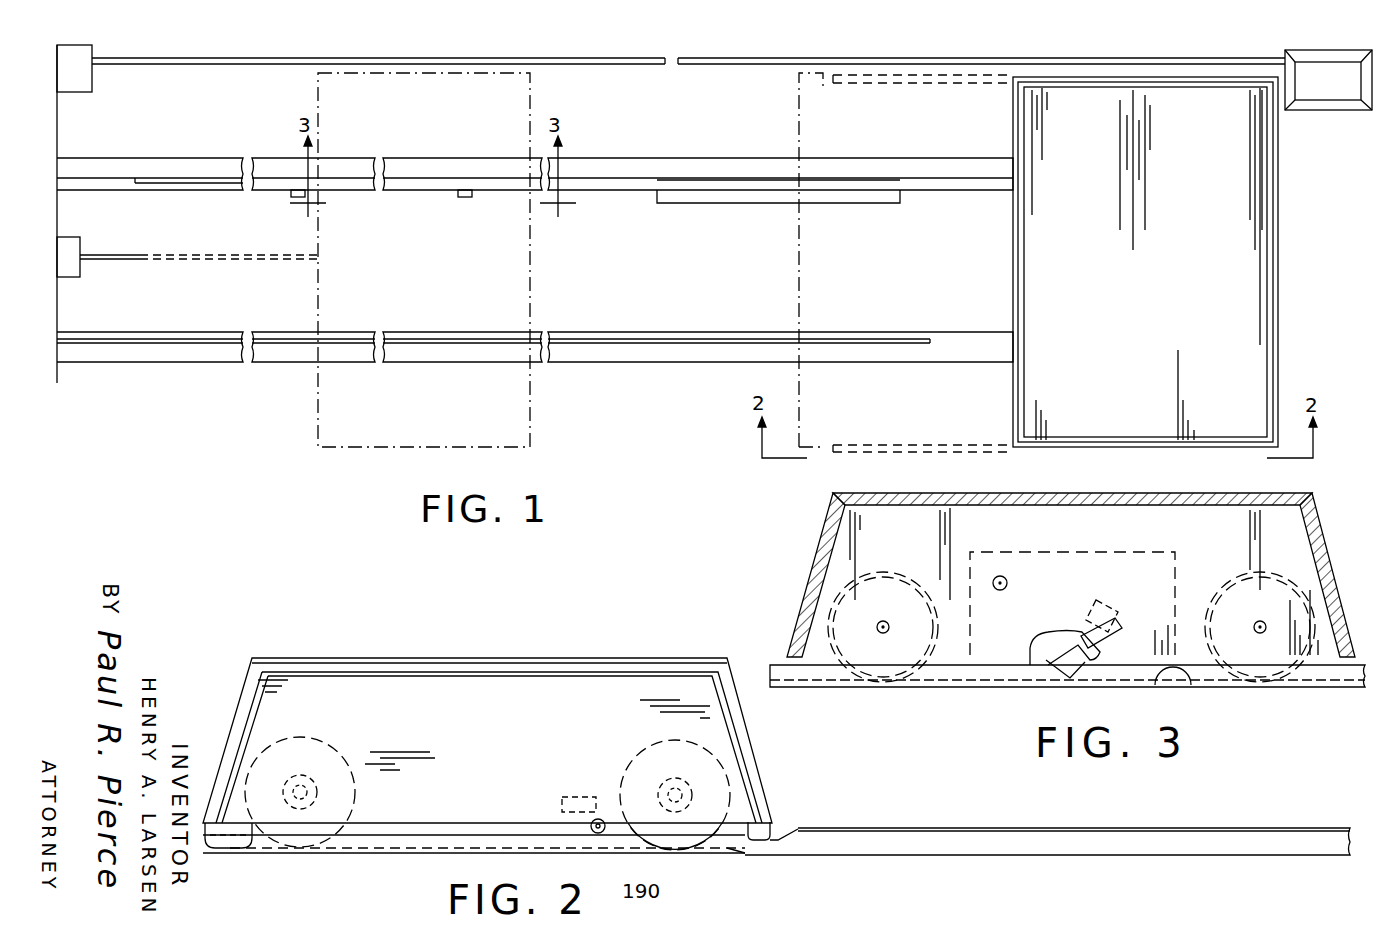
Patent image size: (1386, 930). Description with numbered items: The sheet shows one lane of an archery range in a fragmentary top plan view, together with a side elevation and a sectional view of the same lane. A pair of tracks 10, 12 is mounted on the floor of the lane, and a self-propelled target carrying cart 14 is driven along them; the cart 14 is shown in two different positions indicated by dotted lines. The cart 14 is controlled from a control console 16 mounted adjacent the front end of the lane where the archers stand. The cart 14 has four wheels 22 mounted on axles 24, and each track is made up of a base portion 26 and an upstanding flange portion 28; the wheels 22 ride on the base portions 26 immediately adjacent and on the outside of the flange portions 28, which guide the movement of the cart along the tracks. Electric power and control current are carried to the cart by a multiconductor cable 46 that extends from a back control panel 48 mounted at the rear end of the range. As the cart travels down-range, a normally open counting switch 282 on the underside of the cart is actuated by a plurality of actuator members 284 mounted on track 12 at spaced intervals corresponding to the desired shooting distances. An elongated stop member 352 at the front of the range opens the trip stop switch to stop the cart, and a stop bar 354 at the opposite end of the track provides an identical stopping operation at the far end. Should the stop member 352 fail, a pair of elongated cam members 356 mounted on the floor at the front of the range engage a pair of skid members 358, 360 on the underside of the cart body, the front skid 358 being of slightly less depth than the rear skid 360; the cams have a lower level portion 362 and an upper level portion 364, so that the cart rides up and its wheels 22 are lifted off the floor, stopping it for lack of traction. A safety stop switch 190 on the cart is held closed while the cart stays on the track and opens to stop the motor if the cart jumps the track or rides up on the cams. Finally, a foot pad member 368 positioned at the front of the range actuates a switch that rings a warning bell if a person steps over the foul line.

In FIG. 1, the track 10 is at (598, 372).
In FIG. 2, the track 10 is at (383, 855).
In FIG. 1, the track 12 is at (694, 153).
In FIG. 3, the track 12 is at (837, 690).
In FIG. 3, the target carrying cart 14 is at (1320, 506).
In FIG. 2, the target carrying cart 14 is at (538, 657).
In FIG. 1, the control console 16 is at (1338, 110).
In FIG. 3, the wheels 22 is at (910, 580).
In FIG. 2, the wheels 22 is at (332, 744).
In FIG. 3, the axles 24 is at (900, 617).
In FIG. 2, the axles 24 is at (487, 793).
In FIG. 1, the base portion 26 is at (744, 162).
In FIG. 1, the upstanding flange portion 28 is at (614, 178).
In FIG. 3, the upstanding flange portion 28 is at (784, 666).
In FIG. 1, the multiconductor cable 46 is at (140, 262).
In FIG. 1, the back control panel 48 is at (72, 240).
In FIG. 2, the safety stop switch 190 is at (580, 797).
In FIG. 3, the counting switch 282 is at (1088, 668).
In FIG. 1, the actuator members 284 is at (294, 197).
In FIG. 3, the actuator members 284 is at (1176, 677).
In FIG. 1, the elongated stop member 352 is at (760, 204).
In FIG. 1, the stop bar 354 is at (194, 178).
In FIG. 1, the cam members 356 is at (1093, 92).
In FIG. 2, the cam members 356 is at (1034, 830).
In FIG. 2, the front skid member 358 is at (756, 830).
In FIG. 2, the rear skid member 360 is at (230, 838).
In FIG. 2, the lower level portion 362 is at (460, 838).
In FIG. 1, the upper level portion 364 is at (1218, 88).
In FIG. 2, the upper level portion 364 is at (912, 829).
In FIG. 1, the foot pad member 368 is at (1160, 298).